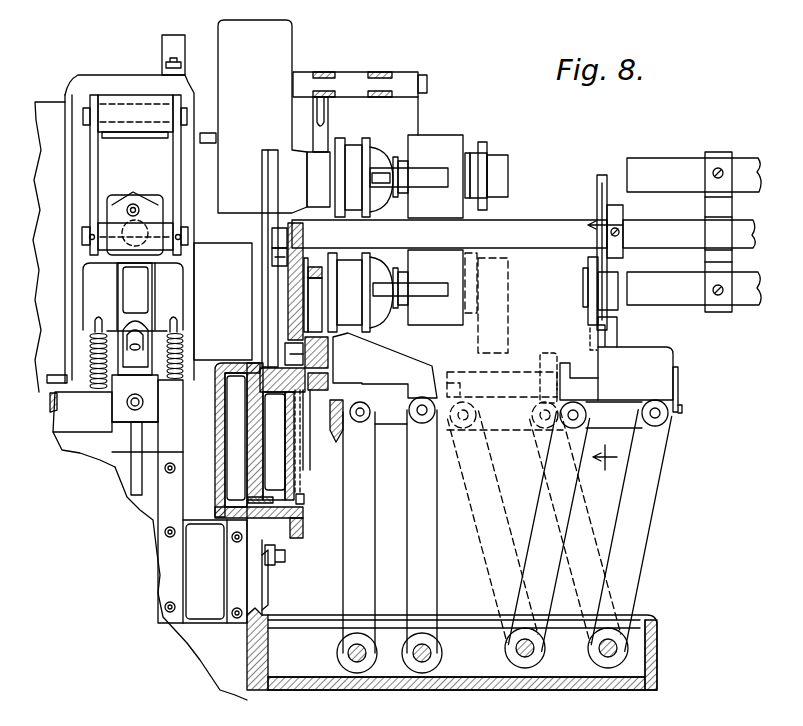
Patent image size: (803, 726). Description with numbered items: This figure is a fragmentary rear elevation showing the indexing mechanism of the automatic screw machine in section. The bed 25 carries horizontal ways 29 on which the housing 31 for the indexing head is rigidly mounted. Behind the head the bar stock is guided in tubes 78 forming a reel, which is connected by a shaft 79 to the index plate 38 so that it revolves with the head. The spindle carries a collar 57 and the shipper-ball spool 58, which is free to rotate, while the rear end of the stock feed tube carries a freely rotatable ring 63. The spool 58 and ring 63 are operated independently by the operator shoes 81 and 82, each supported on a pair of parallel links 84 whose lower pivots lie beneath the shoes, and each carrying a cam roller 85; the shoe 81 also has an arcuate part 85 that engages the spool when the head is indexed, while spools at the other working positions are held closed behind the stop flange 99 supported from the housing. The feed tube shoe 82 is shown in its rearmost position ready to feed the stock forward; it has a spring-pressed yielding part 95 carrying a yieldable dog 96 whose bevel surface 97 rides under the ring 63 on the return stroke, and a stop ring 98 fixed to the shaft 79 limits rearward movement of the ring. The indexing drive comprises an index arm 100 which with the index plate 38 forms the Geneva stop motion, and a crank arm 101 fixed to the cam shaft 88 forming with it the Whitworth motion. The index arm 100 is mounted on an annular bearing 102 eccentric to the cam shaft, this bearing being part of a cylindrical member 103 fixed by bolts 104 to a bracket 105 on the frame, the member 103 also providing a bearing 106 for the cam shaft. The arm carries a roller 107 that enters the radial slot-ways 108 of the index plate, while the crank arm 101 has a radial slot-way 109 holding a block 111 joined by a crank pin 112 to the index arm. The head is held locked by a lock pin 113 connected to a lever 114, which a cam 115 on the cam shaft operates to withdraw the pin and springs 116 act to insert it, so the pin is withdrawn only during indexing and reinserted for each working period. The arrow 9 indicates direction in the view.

The direction arrow 9 is at (602, 338).
The bed 25 is at (210, 652).
The horizontal ways 29 is at (53, 362).
The housing 31 is at (50, 110).
The index plate 38 is at (267, 173).
The collar 57 is at (434, 143).
The spool 58 is at (355, 153).
The ring 63 is at (483, 155).
The tube 78 is at (665, 170).
The shaft 79 is at (537, 218).
The operator shoe 81 is at (392, 412).
The operator shoe 82 is at (635, 425).
The parallel links 84 is at (410, 512).
The cam roller 85 is at (372, 313).
The cam shaft 88 is at (65, 423).
The spring-pressed yielding part 95 is at (640, 360).
The yieldable dog 96 is at (612, 327).
The bevel surface 97 is at (620, 316).
The stop ring 98 is at (602, 175).
The stop flange 99 is at (323, 127).
The index arm 100 is at (290, 270).
The crank arm 101 is at (318, 303).
The annular bearing 102 is at (283, 380).
The cylindrical member 103 is at (283, 393).
The bolts 104 is at (212, 507).
The bracket 105 is at (233, 432).
The bearing 106 is at (280, 440).
The roller 107 is at (265, 207).
The radial slot-ways 108 is at (272, 258).
The radial slot-way 109 is at (315, 288).
The block 111 is at (338, 340).
The crank pin 112 is at (350, 356).
The lock pin 113 is at (110, 215).
The lever 114 is at (117, 278).
The cam 115 is at (118, 482).
The springs 116 is at (67, 357).